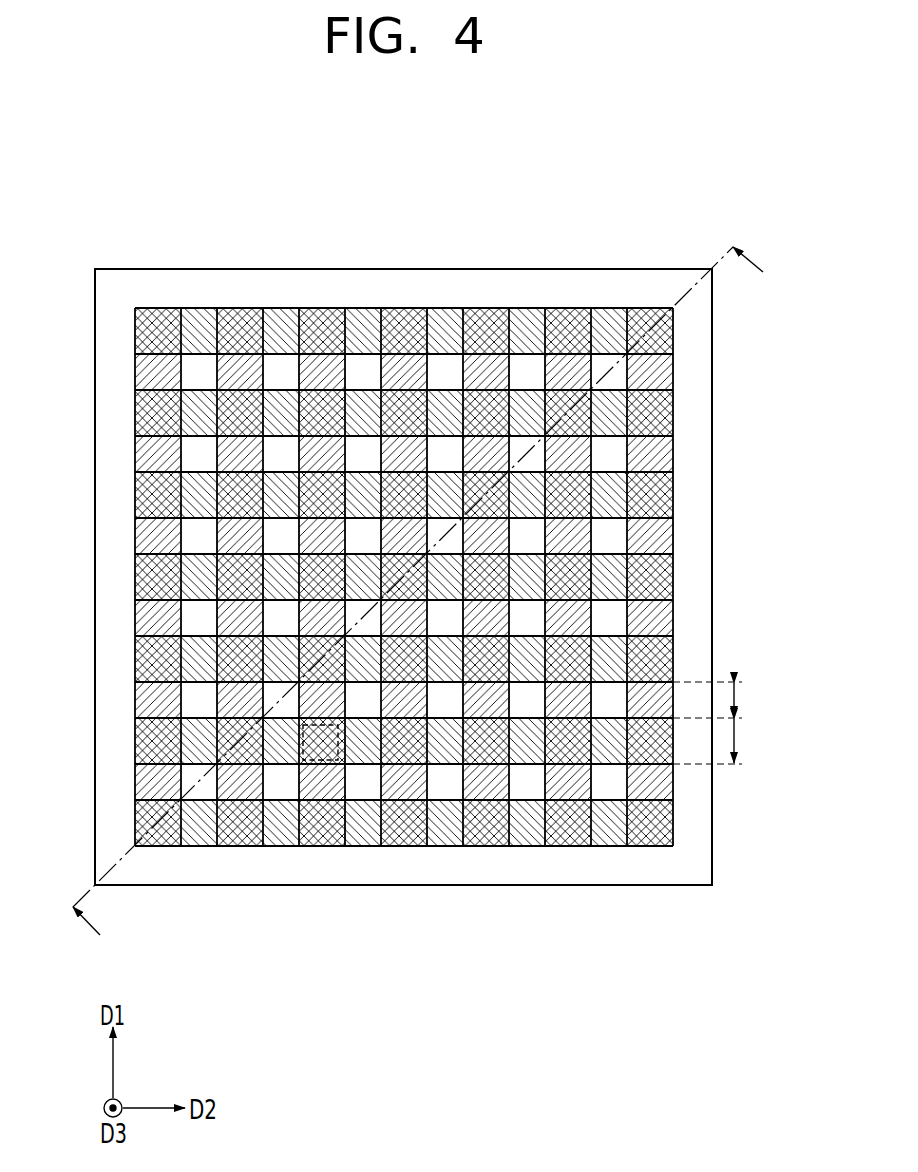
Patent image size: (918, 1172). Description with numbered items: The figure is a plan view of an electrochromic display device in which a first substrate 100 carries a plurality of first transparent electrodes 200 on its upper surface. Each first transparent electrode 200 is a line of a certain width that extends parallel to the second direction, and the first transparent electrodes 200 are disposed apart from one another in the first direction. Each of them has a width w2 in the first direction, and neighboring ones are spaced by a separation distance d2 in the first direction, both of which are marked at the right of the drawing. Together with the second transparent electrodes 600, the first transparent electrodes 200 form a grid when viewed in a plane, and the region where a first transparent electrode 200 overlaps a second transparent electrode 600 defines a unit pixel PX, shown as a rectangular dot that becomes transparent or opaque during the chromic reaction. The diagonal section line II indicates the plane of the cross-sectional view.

The first substrate 100 is at (653, 283).
The first transparent electrode 200 is at (525, 324).
The second transparent electrode 600 is at (665, 373).
The unit pixel PX is at (332, 762).
The separation distance d2 is at (721, 700).
The width w2 is at (721, 741).
The section line II-II' II is at (425, 609).